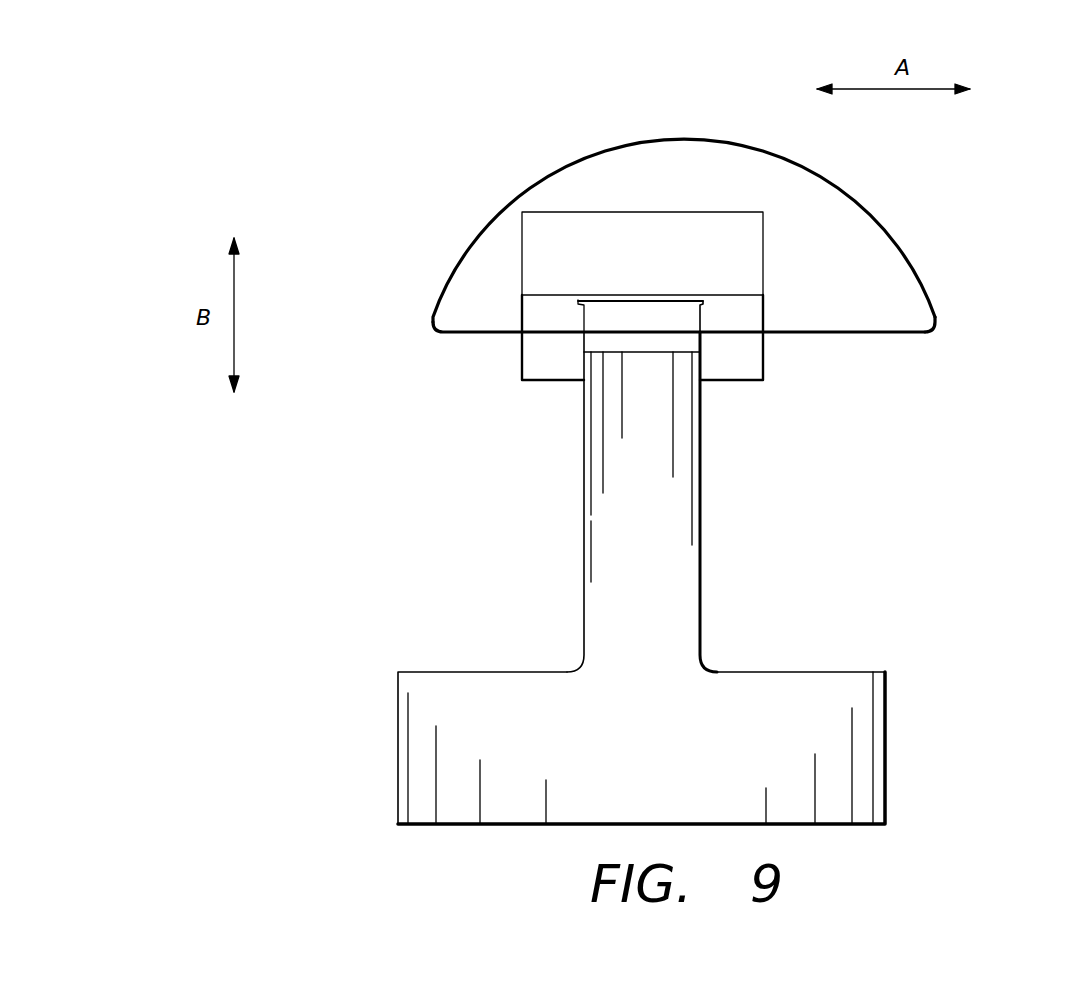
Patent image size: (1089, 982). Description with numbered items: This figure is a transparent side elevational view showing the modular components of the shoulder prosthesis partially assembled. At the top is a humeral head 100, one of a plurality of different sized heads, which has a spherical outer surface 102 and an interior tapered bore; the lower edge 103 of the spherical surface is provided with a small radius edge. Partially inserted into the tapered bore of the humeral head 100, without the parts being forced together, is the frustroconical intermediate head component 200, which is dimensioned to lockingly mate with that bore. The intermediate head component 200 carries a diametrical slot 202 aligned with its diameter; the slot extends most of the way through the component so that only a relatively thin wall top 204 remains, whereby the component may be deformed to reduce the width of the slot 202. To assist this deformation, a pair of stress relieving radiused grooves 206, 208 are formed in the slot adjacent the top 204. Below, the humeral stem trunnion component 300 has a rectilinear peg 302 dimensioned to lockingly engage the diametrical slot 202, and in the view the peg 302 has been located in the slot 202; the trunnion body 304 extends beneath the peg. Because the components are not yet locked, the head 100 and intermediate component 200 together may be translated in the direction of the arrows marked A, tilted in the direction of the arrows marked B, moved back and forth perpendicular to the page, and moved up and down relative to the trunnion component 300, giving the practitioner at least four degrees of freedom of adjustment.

The humeral head 100 is at (842, 218).
The spherical outer surface 102 is at (520, 240).
The lower edge 103 is at (935, 325).
The intermediate head component 200 is at (750, 385).
The diametrical slot 202 is at (598, 342).
The thin wall top 204 is at (638, 295).
The stress relieving radiused groove 206 is at (578, 301).
The stress relieving radiused groove 208 is at (703, 303).
The humeral stem trunnion component 300 is at (748, 603).
The rectilinear peg 302 is at (702, 520).
The base 304 is at (793, 738).